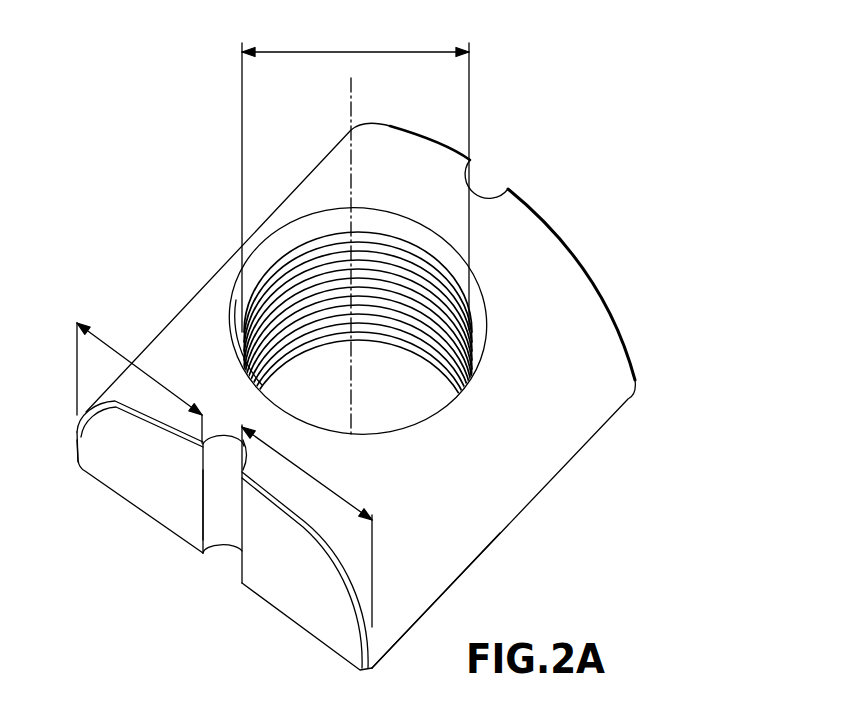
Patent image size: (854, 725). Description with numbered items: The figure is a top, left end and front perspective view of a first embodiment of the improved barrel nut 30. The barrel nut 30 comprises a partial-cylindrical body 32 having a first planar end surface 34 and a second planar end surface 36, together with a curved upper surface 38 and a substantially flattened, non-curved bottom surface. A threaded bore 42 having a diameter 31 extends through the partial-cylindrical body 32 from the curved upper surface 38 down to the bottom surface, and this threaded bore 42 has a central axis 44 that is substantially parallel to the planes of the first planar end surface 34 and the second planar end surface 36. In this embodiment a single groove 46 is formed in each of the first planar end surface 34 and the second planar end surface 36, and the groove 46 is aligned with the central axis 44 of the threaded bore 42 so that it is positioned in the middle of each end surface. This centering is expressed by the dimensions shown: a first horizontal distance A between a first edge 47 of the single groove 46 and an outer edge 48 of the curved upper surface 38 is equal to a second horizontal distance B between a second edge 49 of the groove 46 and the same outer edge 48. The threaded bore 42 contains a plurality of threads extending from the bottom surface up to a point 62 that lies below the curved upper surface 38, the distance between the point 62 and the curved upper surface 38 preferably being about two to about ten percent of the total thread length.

The barrel nut 30 is at (665, 221).
The diameter 31 is at (390, 52).
The partial-cylindrical body 32 is at (537, 450).
The first planar end surface 34 is at (120, 467).
The second planar end surface 36 is at (547, 220).
The curved upper surface 38 is at (388, 508).
The threaded bore 42 is at (298, 383).
The central axis 44 is at (352, 97).
The single groove 46 is at (227, 527).
The first edge 47 is at (197, 527).
The outer edge 48 is at (78, 457).
The second edge 49 is at (242, 554).
The point 62 is at (303, 237).
The first horizontal distance A is at (142, 376).
The second horizontal distance B is at (307, 475).